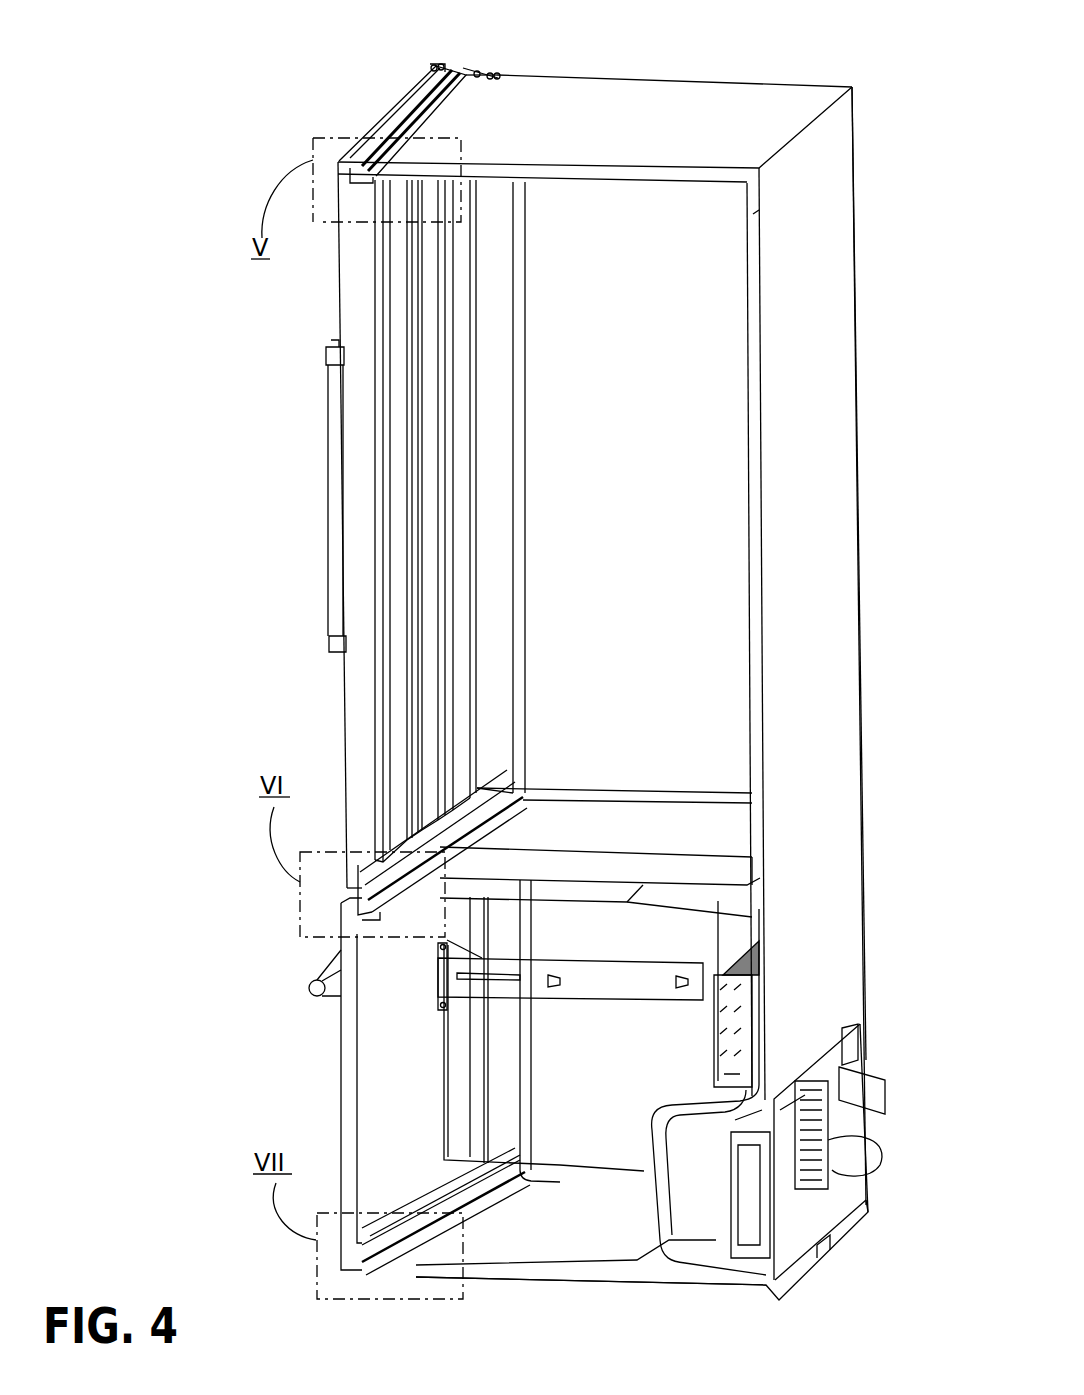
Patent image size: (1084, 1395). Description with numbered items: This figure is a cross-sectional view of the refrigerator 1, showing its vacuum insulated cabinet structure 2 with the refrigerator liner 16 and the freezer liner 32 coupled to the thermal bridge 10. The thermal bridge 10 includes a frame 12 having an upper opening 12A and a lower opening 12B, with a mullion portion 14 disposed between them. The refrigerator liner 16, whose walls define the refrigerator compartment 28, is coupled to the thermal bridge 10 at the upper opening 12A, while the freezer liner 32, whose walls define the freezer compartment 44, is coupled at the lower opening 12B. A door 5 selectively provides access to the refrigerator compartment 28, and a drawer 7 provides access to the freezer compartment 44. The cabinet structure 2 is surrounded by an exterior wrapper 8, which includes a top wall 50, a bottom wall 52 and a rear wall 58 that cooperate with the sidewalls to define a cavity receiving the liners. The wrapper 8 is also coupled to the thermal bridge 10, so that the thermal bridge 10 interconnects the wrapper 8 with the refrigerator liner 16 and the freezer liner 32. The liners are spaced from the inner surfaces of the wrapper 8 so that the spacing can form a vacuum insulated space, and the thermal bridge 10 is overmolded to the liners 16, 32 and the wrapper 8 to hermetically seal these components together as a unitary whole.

The refrigerator 1 is at (297, 89).
The vacuum insulated cabinet structure 2 is at (579, 77).
The top wall 50 is at (661, 108).
The exterior wrapper 8 is at (864, 353).
The thermal bridge 10 is at (357, 275).
The frame 12 is at (307, 717).
The upper opening 12A is at (397, 296).
The lower opening 12B is at (463, 1137).
The refrigerator liner 16 is at (551, 381).
The refrigerator compartment 28 is at (595, 515).
The door 5 is at (346, 686).
The drawer 7 is at (341, 1014).
The mullion portion 14 is at (366, 892).
The freezer liner 32 is at (487, 1040).
The freezer compartment 44 is at (596, 1093).
The rear wall 58 is at (828, 961).
The bottom wall 52 is at (608, 1278).